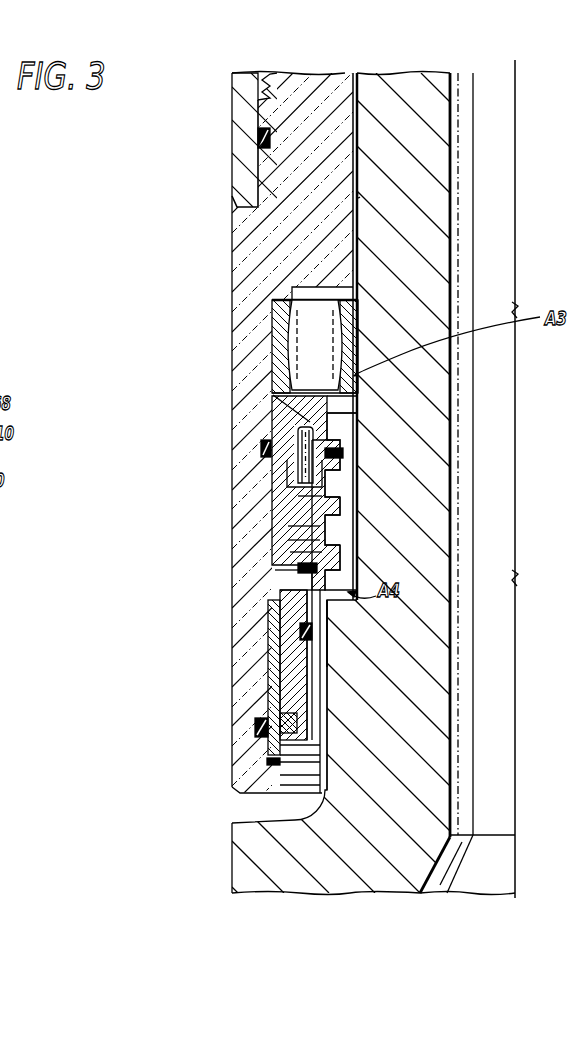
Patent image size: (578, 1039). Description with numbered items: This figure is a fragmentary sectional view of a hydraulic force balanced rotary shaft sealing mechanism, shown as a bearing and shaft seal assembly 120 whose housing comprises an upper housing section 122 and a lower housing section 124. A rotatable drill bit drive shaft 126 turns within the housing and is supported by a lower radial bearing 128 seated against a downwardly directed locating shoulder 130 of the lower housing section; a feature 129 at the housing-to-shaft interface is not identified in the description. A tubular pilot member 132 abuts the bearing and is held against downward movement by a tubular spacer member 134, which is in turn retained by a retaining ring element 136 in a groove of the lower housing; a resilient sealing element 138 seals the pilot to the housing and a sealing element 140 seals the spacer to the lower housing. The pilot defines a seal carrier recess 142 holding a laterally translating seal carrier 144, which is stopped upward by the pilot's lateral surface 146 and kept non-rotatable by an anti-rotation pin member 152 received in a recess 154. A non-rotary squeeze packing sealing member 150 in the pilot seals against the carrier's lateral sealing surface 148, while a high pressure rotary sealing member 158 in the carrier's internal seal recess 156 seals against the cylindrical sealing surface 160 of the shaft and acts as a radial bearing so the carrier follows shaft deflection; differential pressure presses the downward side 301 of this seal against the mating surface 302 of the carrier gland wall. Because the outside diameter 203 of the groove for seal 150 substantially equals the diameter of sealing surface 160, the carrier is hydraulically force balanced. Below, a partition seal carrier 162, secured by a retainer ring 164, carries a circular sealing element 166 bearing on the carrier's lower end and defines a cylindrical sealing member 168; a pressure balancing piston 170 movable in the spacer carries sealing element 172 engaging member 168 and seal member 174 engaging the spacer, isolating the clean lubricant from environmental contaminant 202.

The valve assembly 120 is at (166, 138).
The upper housing section 122 is at (240, 103).
The lower housing section 124 is at (255, 235).
The rotatable drill bit drive shaft 126 is at (425, 110).
The interface line 129 is at (360, 197).
The lower radial bearing 128 is at (272, 337).
The locating shoulder 130 is at (272, 308).
The outside diameter of seal groove 203 is at (282, 390).
The pilot member 132 is at (272, 414).
The squeeze packing type sealing member 150 is at (347, 412).
The resilient sealing element 138 is at (261, 447).
The anti-rotation pin member 152 is at (298, 470).
The recess 154 is at (300, 496).
The mating surface of seal carrier gland wall 302 is at (290, 526).
The downward side of rotary seal 301 is at (290, 540).
The laterally translating seal carrier 144 is at (300, 550).
The passage 202 is at (290, 570).
The partition seal carrier 162 is at (300, 568).
The lateral sealing surface 148 is at (345, 450).
The lateral surface 146 is at (330, 472).
The seal carrier recess 142 is at (330, 498).
The internal seal recess 156 is at (330, 518).
The high pressure rotary sealing member 158 is at (335, 548).
The circular sealing element 166 is at (330, 577).
The cylindrical sealing member 168 is at (330, 600).
The retainer ring 164 is at (296, 603).
The tubular spacer member 134 is at (272, 637).
The retaining ring element 136 is at (235, 783).
The squeeze packing sealing element 172 is at (300, 640).
The pressure balancing piston 170 is at (293, 690).
The squeeze packing seal member 174 is at (258, 718).
The circular squeeze packing sealing element 140 is at (267, 737).
The cylindrical sealing surface 160 is at (320, 697).